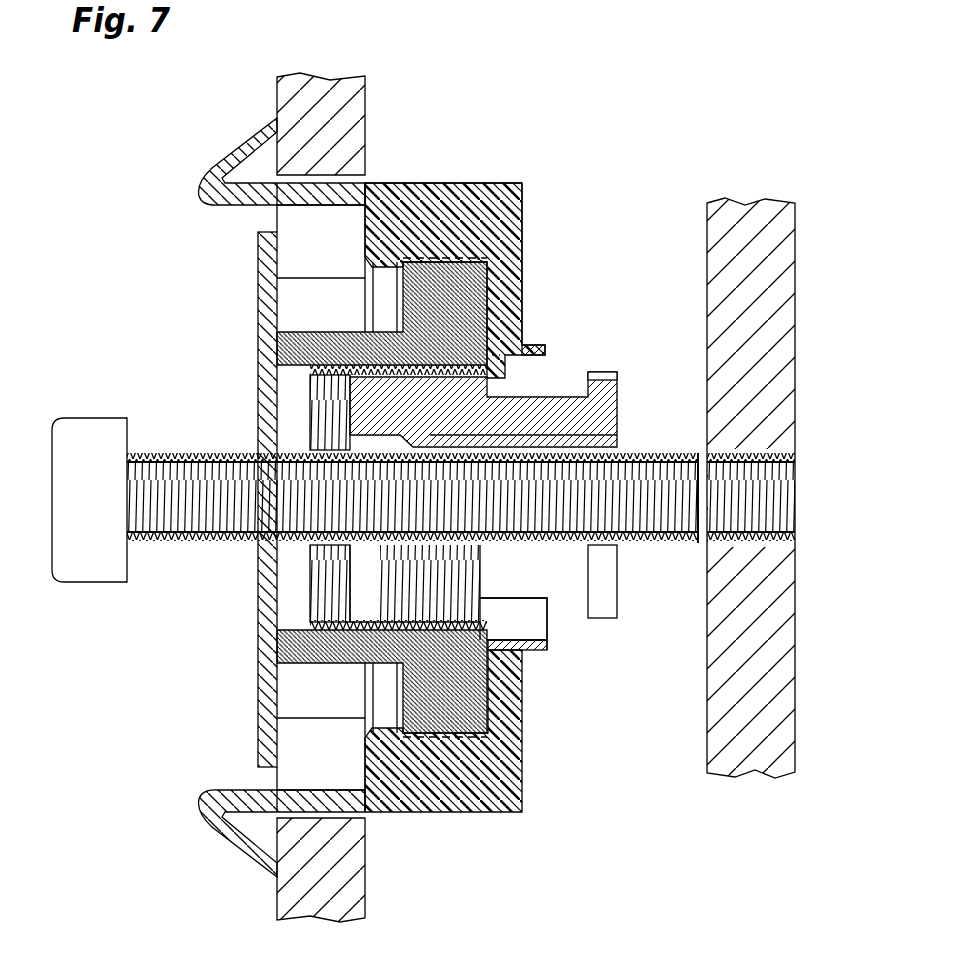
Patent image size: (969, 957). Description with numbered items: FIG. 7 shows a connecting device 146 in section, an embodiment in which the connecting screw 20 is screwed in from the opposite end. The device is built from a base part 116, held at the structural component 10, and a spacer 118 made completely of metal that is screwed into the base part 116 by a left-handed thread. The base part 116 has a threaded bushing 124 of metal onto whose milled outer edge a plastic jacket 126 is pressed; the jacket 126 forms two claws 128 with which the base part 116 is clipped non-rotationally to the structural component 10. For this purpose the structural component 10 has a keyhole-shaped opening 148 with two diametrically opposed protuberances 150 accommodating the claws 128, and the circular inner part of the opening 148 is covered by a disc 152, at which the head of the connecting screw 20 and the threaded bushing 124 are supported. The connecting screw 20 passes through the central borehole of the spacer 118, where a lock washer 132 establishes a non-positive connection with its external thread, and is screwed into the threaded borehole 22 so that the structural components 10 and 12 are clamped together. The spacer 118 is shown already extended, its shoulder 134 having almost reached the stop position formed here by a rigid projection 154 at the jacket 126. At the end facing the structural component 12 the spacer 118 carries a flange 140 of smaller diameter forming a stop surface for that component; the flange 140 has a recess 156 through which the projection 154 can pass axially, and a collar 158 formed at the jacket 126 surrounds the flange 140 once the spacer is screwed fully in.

The structural component 10 is at (365, 115).
The structural component 12 is at (795, 245).
The connecting screw 20 is at (101, 396).
The threaded borehole 22 is at (795, 482).
The base part 116 is at (508, 182).
The spacer 118 is at (556, 608).
The threaded bushing 124 is at (283, 350).
The jacket 126 is at (520, 226).
The claws 128 is at (205, 178).
The lock washer 132 is at (465, 440).
The shoulder 134 is at (500, 390).
The flange 140 is at (606, 590).
The connecting device 146 is at (598, 152).
The keyhole-shaped opening 148 is at (290, 305).
The protuberances 150 is at (290, 215).
The disc 152 is at (270, 600).
The projection 154 is at (495, 350).
The recess 156 is at (604, 370).
The collar 158 is at (523, 652).